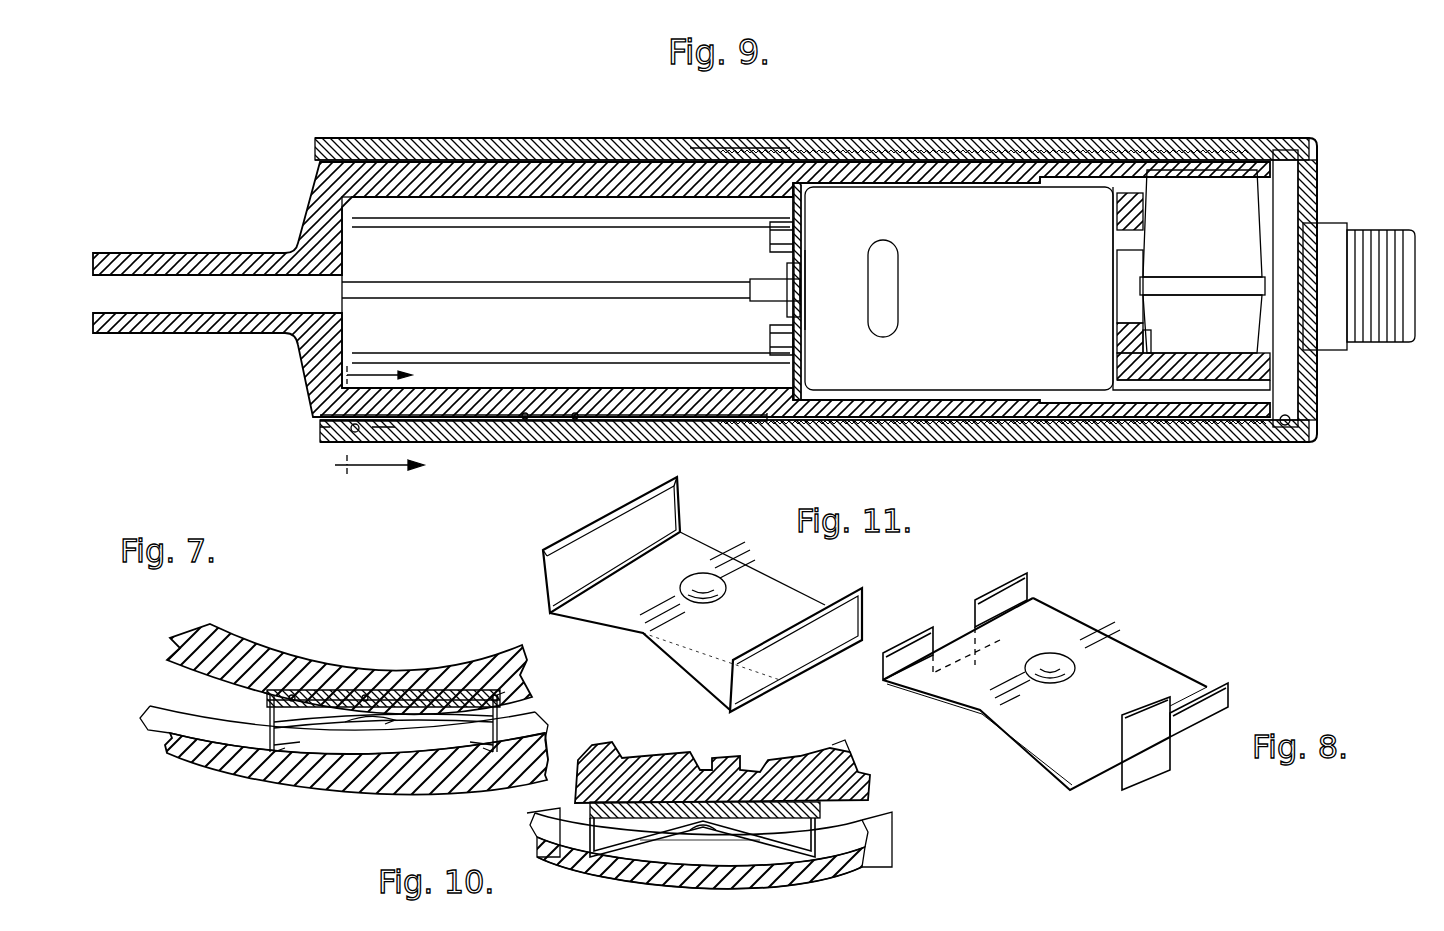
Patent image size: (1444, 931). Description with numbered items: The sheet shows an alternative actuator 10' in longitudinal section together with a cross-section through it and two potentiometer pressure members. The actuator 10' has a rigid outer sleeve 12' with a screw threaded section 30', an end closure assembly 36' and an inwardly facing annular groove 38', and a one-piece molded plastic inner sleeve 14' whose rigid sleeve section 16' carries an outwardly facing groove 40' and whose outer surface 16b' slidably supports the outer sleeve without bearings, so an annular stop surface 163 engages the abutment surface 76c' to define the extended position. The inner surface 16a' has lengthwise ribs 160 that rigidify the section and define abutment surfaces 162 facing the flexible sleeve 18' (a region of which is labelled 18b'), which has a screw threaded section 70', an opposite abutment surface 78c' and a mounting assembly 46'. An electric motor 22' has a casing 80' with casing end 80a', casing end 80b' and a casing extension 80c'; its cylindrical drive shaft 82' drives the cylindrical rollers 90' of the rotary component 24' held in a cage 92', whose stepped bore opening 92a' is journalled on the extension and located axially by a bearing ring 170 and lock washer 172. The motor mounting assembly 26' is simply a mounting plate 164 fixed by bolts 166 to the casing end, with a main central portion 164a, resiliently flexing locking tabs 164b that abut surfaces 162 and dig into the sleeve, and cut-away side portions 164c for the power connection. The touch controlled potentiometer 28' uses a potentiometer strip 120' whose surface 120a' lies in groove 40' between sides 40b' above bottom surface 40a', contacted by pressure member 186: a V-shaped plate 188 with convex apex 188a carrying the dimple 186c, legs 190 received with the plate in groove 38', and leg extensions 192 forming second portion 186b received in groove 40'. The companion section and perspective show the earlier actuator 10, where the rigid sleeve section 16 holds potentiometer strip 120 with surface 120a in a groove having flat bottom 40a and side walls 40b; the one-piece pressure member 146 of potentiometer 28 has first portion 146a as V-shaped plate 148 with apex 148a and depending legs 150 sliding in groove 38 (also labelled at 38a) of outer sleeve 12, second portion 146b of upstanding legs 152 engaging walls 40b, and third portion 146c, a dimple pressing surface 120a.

In FIG. 9, the alternative actuator 10' is at (448, 95).
In FIG. 9, the rigid outer sleeve 12' is at (816, 256).
In FIG. 9, the inner sleeve 14' is at (583, 108).
In FIG. 9, the rigid sleeve section 16' is at (681, 255).
In FIG. 9, the inner surface 16a' is at (567, 292).
In FIG. 10, the inner surface 16a' is at (722, 772).
In FIG. 9, the outer surface 16b' is at (571, 269).
In FIG. 9, the annular stop surface 163 is at (692, 148).
In FIG. 9, the abutment surfaces 162 is at (793, 180).
In FIG. 9, the screw threaded section 30' is at (993, 252).
In FIG. 9, the electrically powered motor 22' is at (933, 149).
In FIG. 9, the abutment surface 76c' is at (1012, 133).
In FIG. 9, the rear wall 18b' is at (1080, 119).
In FIG. 9, the flexible sleeve 18' is at (1121, 128).
In FIG. 9, the casing end 80a' is at (1152, 142).
In FIG. 9, the power driven rotary component 24' is at (1344, 249).
In FIG. 9, the end closure assembly 36' is at (1330, 288).
In FIG. 9, the mounting assembly 46' is at (231, 213).
In FIG. 9, the lengthwise extending ribs 160 is at (592, 218).
In FIG. 10, the lengthwise extending ribs 160 is at (590, 745).
In FIG. 9, the motor mounting assembly 26' is at (571, 287).
In FIG. 9, the mounting plate 164 is at (808, 245).
In FIG. 9, the main central portion 164a is at (790, 212).
In FIG. 10, the main central portion 164a is at (832, 746).
In FIG. 9, the locking tabs 164b is at (808, 196).
In FIG. 10, the locking tabs 164b is at (630, 752).
In FIG. 10, the cut away side portions 164c is at (848, 756).
In FIG. 9, the bolts 166 is at (772, 240).
In FIG. 9, the casing end 80b' is at (831, 290).
In FIG. 9, the motor casing 80' is at (959, 288).
In FIG. 9, the stepped bore opening 92a' is at (1090, 231).
In FIG. 9, the casing extension 80c' is at (1091, 288).
In FIG. 9, the bearing ring 170 is at (1118, 342).
In FIG. 9, the lock washer 172 is at (1152, 342).
In FIG. 9, the rotary members 90' is at (1202, 261).
In FIG. 9, the drive shaft 82' is at (1202, 268).
In FIG. 9, the cage 92' is at (1191, 331).
In FIG. 9, the screw threaded section 70' is at (1193, 437).
In FIG. 9, the abutment surface 78c' is at (1302, 447).
In FIG. 9, the potentiometer strip 120' is at (543, 368).
In FIG. 9, the outwardly facing groove 40' is at (568, 367).
In FIG. 9, the touch controlled potentiometer 28' is at (311, 441).
In FIG. 10, the touch controlled potentiometer 28' is at (668, 717).
In FIG. 9, the annular groove 38' is at (369, 462).
In FIG. 10, the annular groove 38' is at (727, 851).
In FIG. 9, the actuator 10 is at (392, 421).
In FIG. 7, the rigid sleeve section 16 is at (323, 660).
In FIG. 7, the potentiometer strip 120 is at (383, 663).
In FIG. 7, the outer surface 120a is at (383, 655).
In FIG. 7, the bottom surface 40a is at (378, 665).
In FIG. 7, the groove side walls 40b is at (402, 645).
In FIG. 7, the groove 38 is at (356, 747).
In FIG. 7, the outer sleeve 12 is at (123, 760).
In FIG. 7, the liner edge 38a is at (212, 735).
In FIG. 7, the touch controlled potentiometer 28 is at (215, 803).
In FIG. 8, the pressure member 146 is at (1152, 632).
In FIG. 8, the first portion 146a is at (1032, 760).
In FIG. 8, the second portion 146b is at (1232, 695).
In FIG. 7, the third portion 146c is at (405, 748).
In FIG. 8, the third portion 146c is at (1050, 650).
In FIG. 7, the V-shaped plate 148 is at (455, 752).
In FIG. 8, the V-shaped plate 148 is at (1125, 672).
In FIG. 7, the convex apex 148a is at (348, 730).
In FIG. 8, the convex apex 148a is at (1090, 648).
In FIG. 7, the legs 150 is at (278, 760).
In FIG. 8, the legs 150 is at (975, 640).
In FIG. 7, the legs 152 is at (250, 692).
In FIG. 8, the legs 152 is at (945, 622).
In FIG. 11, the pressure member 186 is at (605, 505).
In FIG. 10, the pressure member 186 is at (655, 862).
In FIG. 11, the second portion 186b is at (675, 654).
In FIG. 11, the third portion 186c is at (705, 572).
In FIG. 10, the third portion 186c is at (732, 852).
In FIG. 11, the V-shaped plate 188 is at (728, 638).
In FIG. 10, the V-shaped plate 188 is at (770, 852).
In FIG. 11, the convex apex 188a is at (760, 555).
In FIG. 10, the convex apex 188a is at (702, 852).
In FIG. 11, the legs 190 is at (672, 510).
In FIG. 10, the legs 190 is at (535, 845).
In FIG. 11, the leg extensions 192 is at (572, 540).
In FIG. 10, the leg extensions 192 is at (578, 810).
In FIG. 10, the potentiometer strip surface 120a' is at (705, 769).
In FIG. 10, the groove bottom surface 40a' is at (856, 888).
In FIG. 10, the groove sides 40b' is at (716, 822).